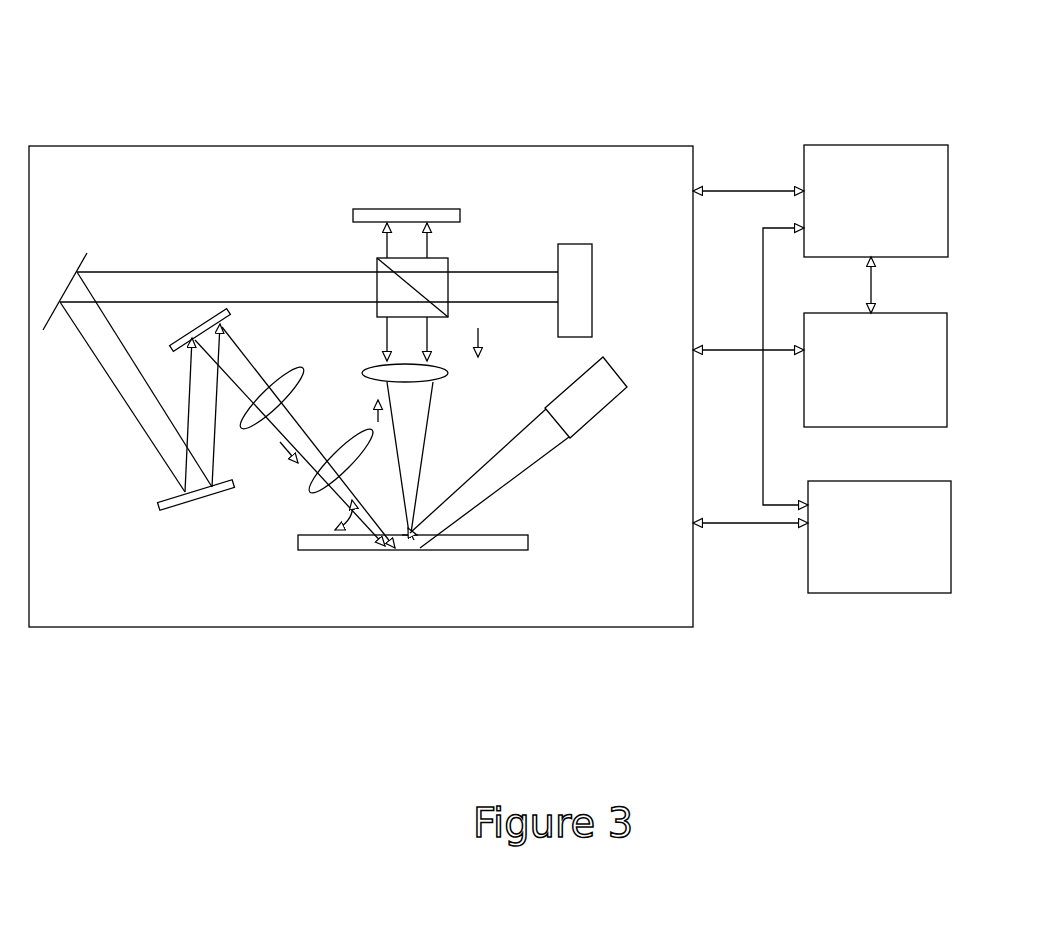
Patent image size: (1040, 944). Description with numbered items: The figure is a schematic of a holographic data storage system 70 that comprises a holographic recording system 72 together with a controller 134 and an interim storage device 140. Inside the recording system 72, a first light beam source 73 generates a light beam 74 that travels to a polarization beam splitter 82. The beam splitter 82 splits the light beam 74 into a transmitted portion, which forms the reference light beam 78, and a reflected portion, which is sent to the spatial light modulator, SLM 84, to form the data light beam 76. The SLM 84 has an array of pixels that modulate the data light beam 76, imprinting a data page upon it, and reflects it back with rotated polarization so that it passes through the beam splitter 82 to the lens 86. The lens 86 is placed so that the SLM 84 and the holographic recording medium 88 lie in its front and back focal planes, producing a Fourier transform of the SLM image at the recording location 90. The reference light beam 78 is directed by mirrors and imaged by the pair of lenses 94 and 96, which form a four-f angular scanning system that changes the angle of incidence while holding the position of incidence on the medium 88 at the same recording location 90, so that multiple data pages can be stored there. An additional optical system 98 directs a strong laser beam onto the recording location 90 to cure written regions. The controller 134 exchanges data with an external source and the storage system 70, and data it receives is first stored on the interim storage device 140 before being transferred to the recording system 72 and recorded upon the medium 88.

The holographic data storage system 70 is at (778, 88).
The holographic recording system 72 is at (144, 145).
The first light beam source 73 is at (577, 243).
The light beam 74 is at (493, 272).
The data light beam 76 is at (376, 257).
The reference light beam 78 is at (137, 432).
The polarization beam splitter 82 is at (432, 282).
The spatial light modulator 84 is at (408, 208).
The lens 86 is at (430, 373).
The holographic recording medium 88 is at (485, 540).
The recording location 90 is at (410, 532).
The lens 94 is at (250, 433).
The lens 96 is at (312, 492).
The additional optical system 98 is at (602, 405).
The controller 134 is at (897, 145).
The interim storage device 140 is at (949, 370).